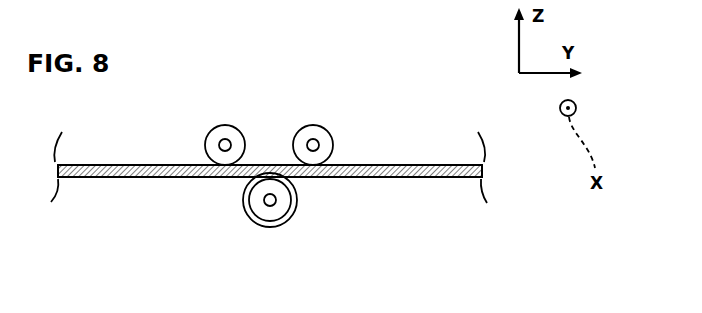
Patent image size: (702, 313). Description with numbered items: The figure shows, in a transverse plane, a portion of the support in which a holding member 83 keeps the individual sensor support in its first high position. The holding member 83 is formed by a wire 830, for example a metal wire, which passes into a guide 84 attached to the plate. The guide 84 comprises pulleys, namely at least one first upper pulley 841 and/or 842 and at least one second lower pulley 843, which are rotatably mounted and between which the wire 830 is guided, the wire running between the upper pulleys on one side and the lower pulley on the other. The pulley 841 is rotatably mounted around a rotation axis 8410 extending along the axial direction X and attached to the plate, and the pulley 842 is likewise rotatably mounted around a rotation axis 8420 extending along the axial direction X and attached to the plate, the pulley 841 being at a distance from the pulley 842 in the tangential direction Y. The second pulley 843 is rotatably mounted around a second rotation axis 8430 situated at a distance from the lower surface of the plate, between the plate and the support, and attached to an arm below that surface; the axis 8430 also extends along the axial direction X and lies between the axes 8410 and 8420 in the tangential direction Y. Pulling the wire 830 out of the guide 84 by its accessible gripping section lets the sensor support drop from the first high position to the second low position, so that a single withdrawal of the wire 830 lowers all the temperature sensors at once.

The holding member 83 is at (362, 163).
The wire 830 is at (172, 165).
The guide 84 is at (283, 150).
The first upper pulley 841 is at (249, 109).
The rotation axis 8410 is at (229, 142).
The first upper pulley 842 is at (340, 133).
The rotation axis 8420 is at (316, 147).
The second lower pulley 843 is at (288, 222).
The second rotation axis 8430 is at (269, 203).